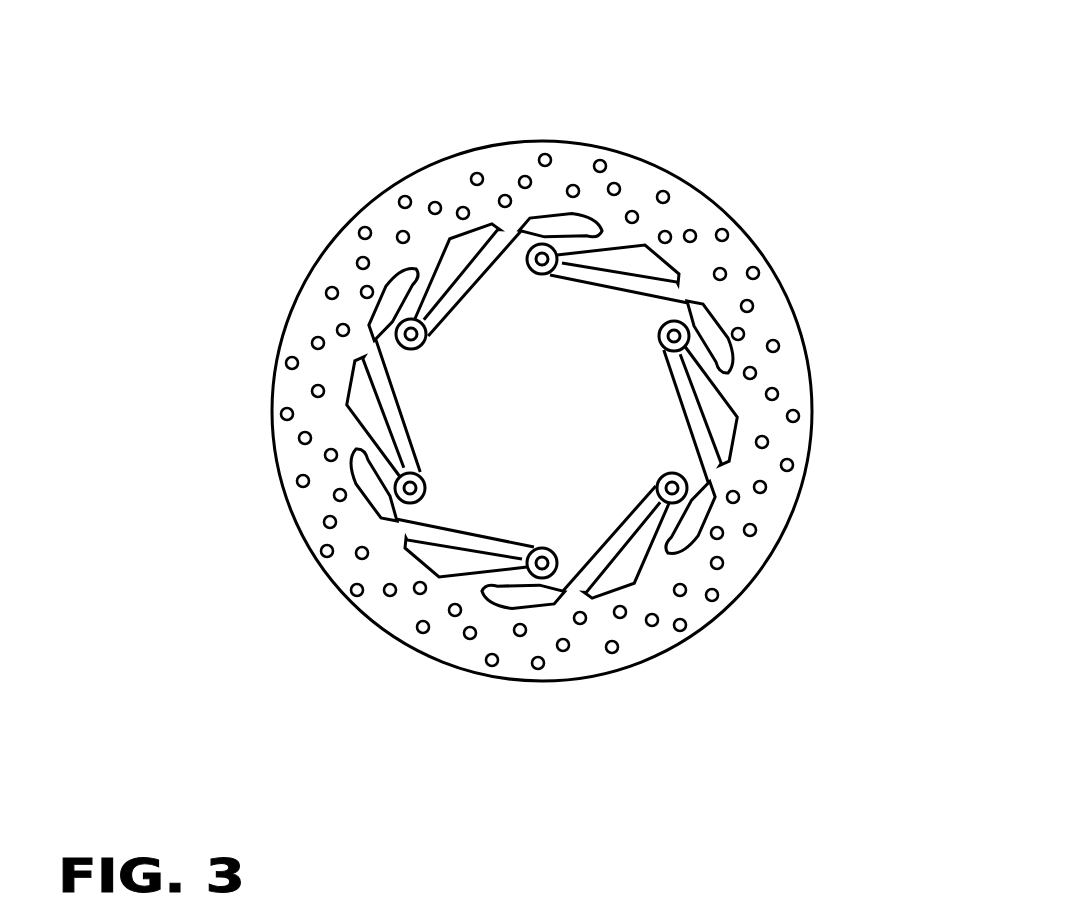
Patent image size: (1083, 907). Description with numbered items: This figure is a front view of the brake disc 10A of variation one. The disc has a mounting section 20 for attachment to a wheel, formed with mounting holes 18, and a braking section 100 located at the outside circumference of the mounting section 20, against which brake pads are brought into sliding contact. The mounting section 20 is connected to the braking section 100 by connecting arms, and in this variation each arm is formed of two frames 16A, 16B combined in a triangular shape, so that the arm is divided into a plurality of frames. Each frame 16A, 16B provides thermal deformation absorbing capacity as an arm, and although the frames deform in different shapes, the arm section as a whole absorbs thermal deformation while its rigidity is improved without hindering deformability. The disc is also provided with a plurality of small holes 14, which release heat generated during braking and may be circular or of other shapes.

The braking section 100 is at (542, 425).
The brake disc 10A is at (700, 172).
The small holes 14 is at (762, 305).
The mounting holes 18 is at (551, 247).
The mounting section 20 is at (549, 421).
The frame 16A is at (445, 328).
The frame 16B is at (473, 277).